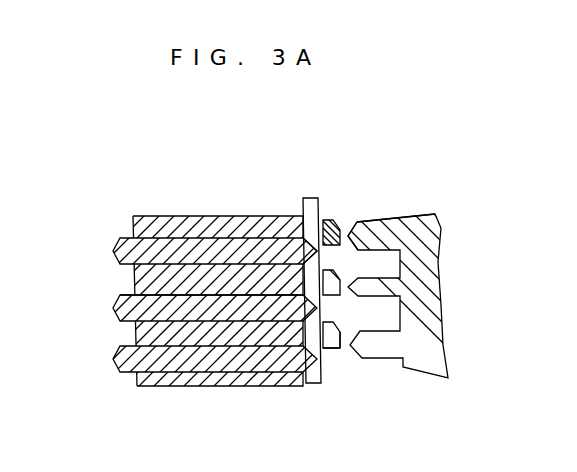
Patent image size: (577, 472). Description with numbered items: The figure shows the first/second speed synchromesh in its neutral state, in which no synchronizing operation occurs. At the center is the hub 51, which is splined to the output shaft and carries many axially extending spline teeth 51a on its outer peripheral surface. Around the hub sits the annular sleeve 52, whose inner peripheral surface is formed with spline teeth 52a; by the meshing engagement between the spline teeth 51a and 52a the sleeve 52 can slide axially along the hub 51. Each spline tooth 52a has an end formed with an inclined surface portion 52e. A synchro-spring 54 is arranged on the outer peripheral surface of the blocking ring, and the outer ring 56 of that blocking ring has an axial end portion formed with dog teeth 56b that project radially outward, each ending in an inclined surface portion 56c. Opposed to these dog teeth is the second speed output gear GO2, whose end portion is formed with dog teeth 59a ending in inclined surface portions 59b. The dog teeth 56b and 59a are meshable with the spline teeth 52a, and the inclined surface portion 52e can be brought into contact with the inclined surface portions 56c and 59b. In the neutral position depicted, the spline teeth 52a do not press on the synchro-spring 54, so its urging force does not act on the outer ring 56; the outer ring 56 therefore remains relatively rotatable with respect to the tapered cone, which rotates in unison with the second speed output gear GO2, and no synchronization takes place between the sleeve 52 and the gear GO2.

The hub 51 is at (221, 211).
The spline teeth 51a is at (152, 182).
The annular sleeve 52 is at (105, 232).
The spline teeth 52a is at (211, 226).
The inclined surface portion 52e is at (308, 240).
The synchro-spring 54 is at (320, 384).
The outer ring 56 is at (337, 207).
The dog teeth 56b is at (333, 350).
The inclined surface portion 56c is at (326, 349).
The dog teeth 59a is at (393, 222).
The inclined surface portion 59b is at (356, 222).
The second speed output gear GO2 is at (454, 223).